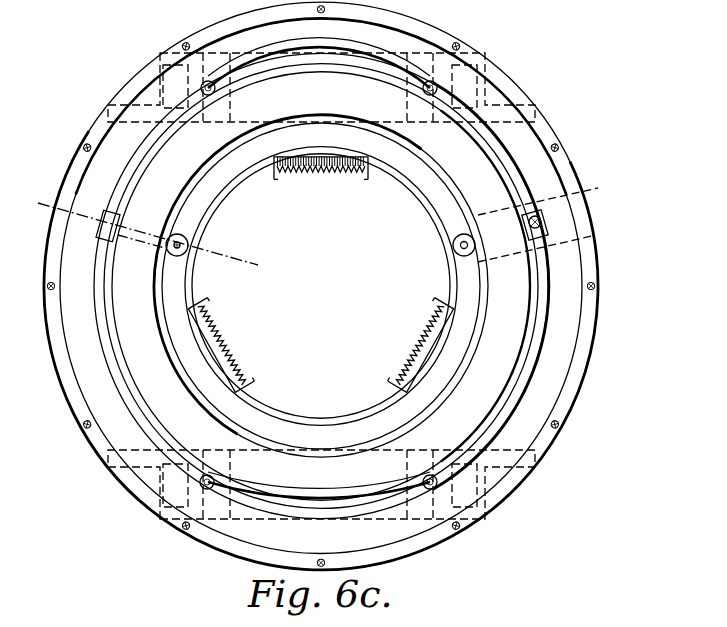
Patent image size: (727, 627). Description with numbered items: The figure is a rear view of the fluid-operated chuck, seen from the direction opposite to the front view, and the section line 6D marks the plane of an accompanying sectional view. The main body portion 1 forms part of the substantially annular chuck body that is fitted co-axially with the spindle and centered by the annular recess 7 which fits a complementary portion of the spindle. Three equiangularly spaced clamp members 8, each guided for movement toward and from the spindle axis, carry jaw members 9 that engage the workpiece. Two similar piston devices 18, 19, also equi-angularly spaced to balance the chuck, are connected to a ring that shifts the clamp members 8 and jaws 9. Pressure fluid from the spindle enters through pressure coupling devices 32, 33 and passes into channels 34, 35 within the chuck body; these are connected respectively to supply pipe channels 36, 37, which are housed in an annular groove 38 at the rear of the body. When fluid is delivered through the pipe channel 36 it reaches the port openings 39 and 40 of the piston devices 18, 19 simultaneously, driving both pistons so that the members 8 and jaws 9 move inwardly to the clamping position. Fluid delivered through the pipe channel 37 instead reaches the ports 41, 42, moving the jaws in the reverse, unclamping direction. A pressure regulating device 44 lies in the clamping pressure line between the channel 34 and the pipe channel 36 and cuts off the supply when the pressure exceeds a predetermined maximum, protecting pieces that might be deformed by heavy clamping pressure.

The main body portion 1 is at (100, 121).
The section line 6D is at (32, 203).
The annular recess 7 is at (160, 303).
The clamp member 8 is at (271, 164).
The jaw member 9 is at (330, 168).
The piston device 18 is at (319, 68).
The piston device 19 is at (319, 485).
The pressure coupling device 32 is at (455, 233).
The pressure coupling device 33 is at (182, 257).
The channel 34 is at (455, 252).
The channel 35 is at (178, 236).
The supply pipe channel 36 is at (549, 318).
The supply pipe channel 37 is at (103, 263).
The annular groove 38 is at (63, 319).
The port opening 39 is at (224, 96).
The port opening 40 is at (410, 474).
The port 41 is at (413, 96).
The port 42 is at (224, 479).
The pressure regulating device 44 is at (566, 221).